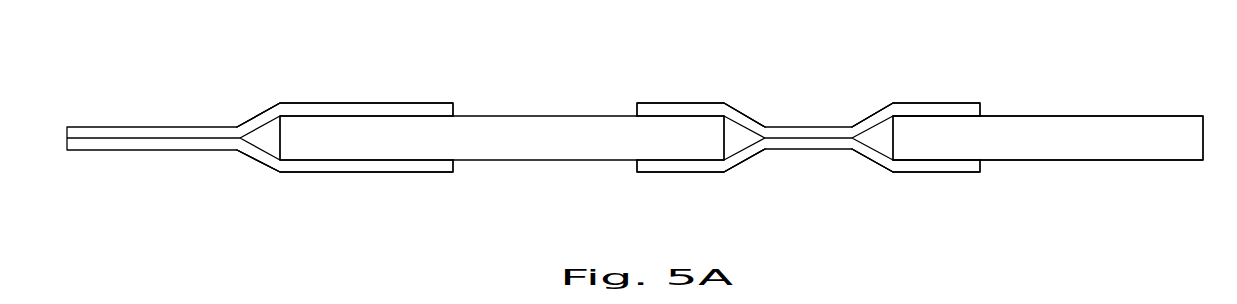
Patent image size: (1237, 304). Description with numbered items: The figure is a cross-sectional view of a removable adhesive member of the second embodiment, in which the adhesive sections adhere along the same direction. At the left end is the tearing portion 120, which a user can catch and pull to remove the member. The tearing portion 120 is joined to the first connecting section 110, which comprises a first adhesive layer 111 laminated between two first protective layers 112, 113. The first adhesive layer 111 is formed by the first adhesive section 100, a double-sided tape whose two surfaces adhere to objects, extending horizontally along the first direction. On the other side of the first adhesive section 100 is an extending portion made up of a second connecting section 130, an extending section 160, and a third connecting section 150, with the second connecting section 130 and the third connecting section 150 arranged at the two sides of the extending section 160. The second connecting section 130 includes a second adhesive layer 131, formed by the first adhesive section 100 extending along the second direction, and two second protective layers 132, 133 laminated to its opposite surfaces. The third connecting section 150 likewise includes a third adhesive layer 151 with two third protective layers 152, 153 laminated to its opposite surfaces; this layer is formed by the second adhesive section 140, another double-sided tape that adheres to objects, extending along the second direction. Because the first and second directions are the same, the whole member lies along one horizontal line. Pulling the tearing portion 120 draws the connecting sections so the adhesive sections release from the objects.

The first adhesive section 100 is at (593, 116).
The first connecting section 110 is at (452, 93).
The first adhesive layer 111 is at (405, 142).
The first protective layer 112 is at (447, 110).
The first protective layer 113 is at (368, 172).
The tearing portion 120 is at (133, 127).
The second connecting section 130 is at (722, 92).
The second adhesive layer 131 is at (663, 138).
The second protective layer 132 is at (695, 110).
The second protective layer 133 is at (673, 172).
The second adhesive section 140 is at (1106, 118).
The third connecting section 150 is at (983, 92).
The third adhesive layer 151 is at (953, 138).
The third protective layer 152 is at (922, 112).
The third protective layer 153 is at (942, 172).
The extending section 160 is at (893, 92).